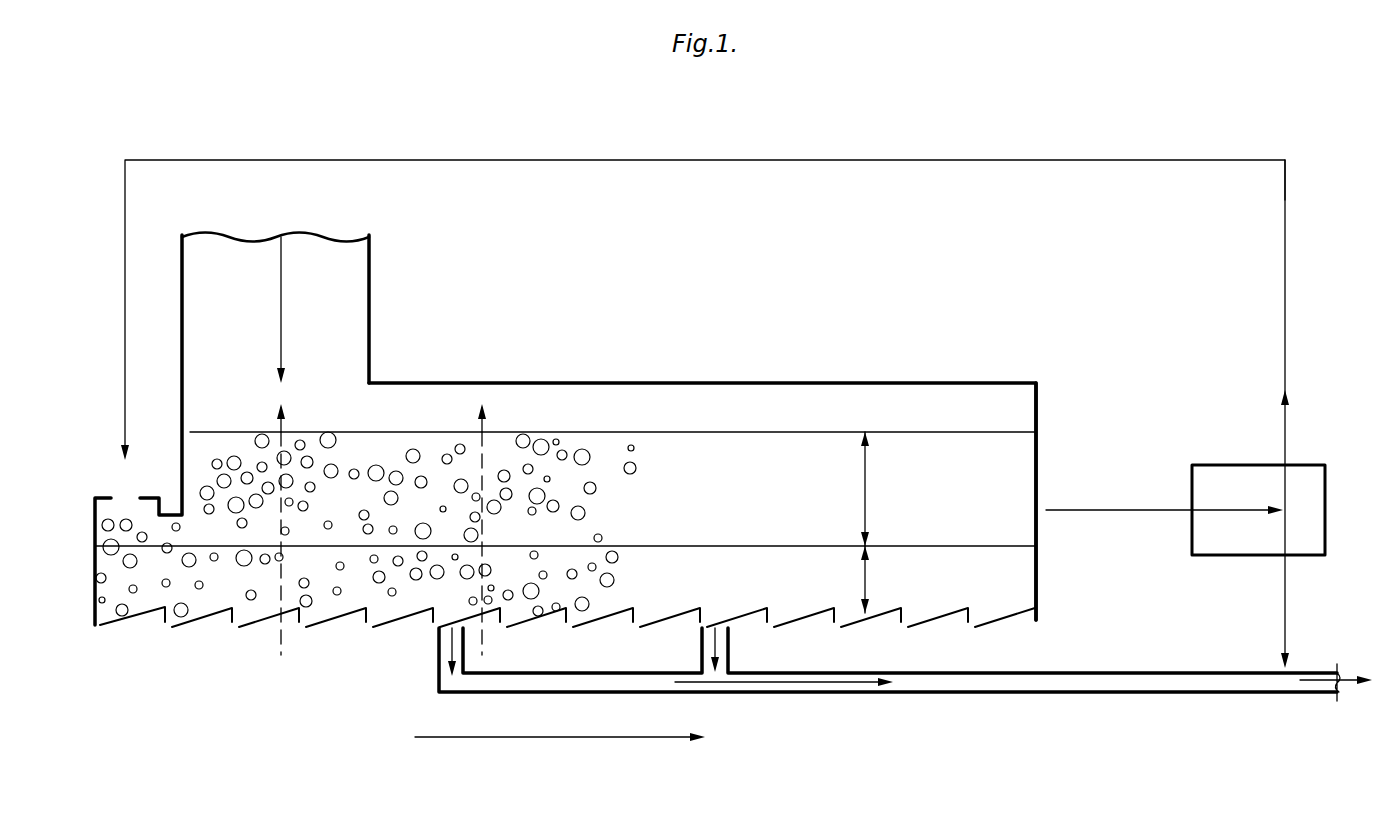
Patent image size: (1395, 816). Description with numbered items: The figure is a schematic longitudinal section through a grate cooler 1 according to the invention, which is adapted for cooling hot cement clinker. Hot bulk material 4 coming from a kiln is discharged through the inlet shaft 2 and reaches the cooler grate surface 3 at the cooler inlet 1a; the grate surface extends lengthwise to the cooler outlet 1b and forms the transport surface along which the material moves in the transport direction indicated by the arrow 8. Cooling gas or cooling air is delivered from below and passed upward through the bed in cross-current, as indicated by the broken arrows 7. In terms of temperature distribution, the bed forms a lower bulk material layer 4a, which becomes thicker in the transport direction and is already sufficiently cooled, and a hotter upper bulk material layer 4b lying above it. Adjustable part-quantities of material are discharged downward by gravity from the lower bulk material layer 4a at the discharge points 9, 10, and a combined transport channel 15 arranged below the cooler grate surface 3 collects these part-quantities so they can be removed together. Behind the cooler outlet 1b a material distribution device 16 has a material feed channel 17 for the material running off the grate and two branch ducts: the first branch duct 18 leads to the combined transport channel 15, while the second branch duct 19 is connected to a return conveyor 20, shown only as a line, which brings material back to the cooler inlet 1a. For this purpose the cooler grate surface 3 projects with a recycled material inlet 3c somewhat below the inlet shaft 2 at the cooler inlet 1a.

The grate cooler 1 is at (602, 380).
The cooler inlet 1a is at (176, 420).
The cooler outlet 1b is at (1045, 446).
The inlet shaft 2 is at (345, 300).
The cooler grate surface 3 is at (940, 604).
The recycled material inlet 3c is at (100, 530).
The bulk material 4 is at (540, 472).
The lower bulk material layer 4a is at (866, 580).
The upper bulk material layer 4b is at (866, 484).
The cooling gas arrows 7 is at (287, 418).
The transport direction arrow 8 is at (625, 740).
The discharge point 9 is at (439, 652).
The discharge point 10 is at (729, 648).
The combined transport channel 15 is at (1010, 692).
The material distribution device 16 is at (1302, 465).
The material feed channel 17 is at (1116, 510).
The first branch duct 18 is at (1283, 580).
The second branch duct 19 is at (1283, 430).
The return conveyor 20 is at (918, 160).